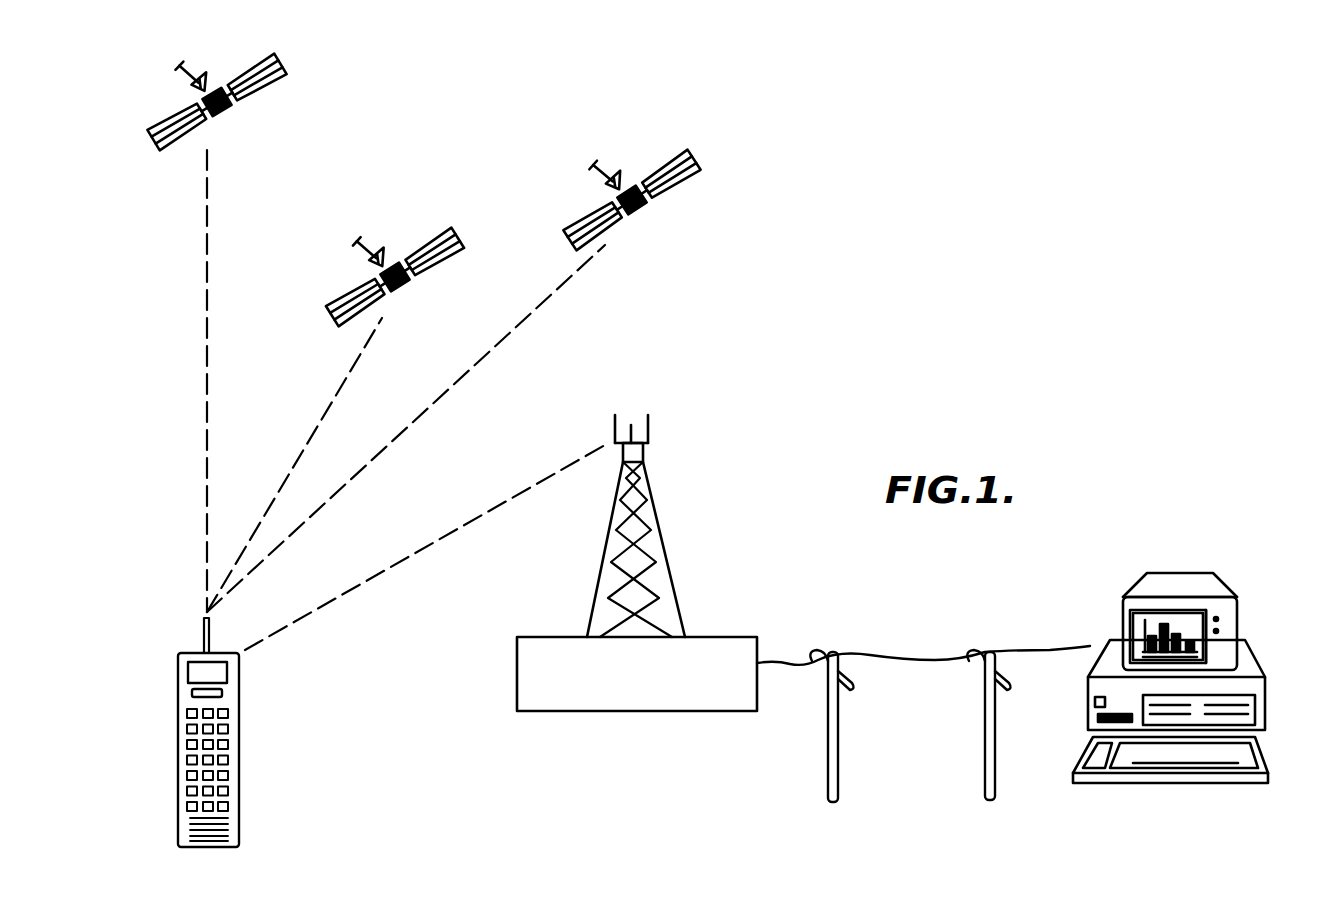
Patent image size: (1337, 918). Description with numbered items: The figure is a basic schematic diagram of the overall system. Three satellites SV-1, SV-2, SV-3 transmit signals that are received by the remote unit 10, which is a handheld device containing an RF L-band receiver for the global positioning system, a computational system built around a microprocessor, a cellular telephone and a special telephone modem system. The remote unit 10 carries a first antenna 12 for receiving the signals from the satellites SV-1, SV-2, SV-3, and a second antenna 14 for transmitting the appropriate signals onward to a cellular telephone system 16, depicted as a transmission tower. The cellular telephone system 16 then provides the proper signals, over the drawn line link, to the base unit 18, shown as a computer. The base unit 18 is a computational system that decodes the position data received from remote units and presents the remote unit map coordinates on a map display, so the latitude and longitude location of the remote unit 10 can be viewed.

The remote unit 10 is at (168, 736).
The first antenna 12 is at (204, 628).
The second antenna 14 is at (243, 655).
The cellular telephone system 16 is at (554, 637).
The base unit 18 is at (1258, 645).
The satellite SV-1 is at (248, 84).
The satellite SV-2 is at (400, 260).
The satellite SV-3 is at (647, 183).